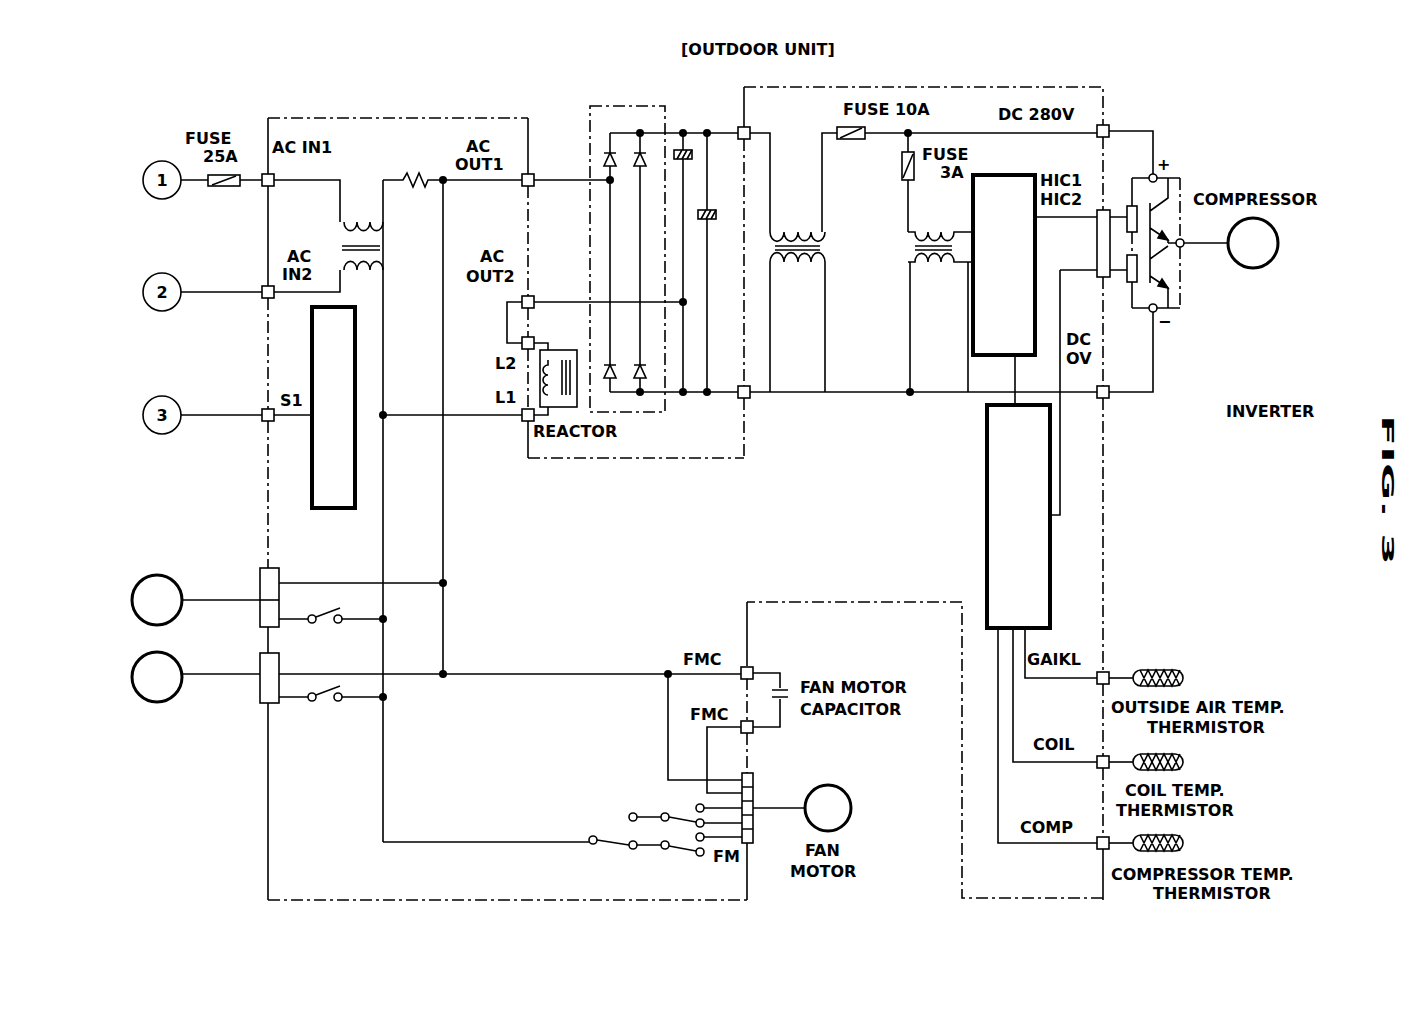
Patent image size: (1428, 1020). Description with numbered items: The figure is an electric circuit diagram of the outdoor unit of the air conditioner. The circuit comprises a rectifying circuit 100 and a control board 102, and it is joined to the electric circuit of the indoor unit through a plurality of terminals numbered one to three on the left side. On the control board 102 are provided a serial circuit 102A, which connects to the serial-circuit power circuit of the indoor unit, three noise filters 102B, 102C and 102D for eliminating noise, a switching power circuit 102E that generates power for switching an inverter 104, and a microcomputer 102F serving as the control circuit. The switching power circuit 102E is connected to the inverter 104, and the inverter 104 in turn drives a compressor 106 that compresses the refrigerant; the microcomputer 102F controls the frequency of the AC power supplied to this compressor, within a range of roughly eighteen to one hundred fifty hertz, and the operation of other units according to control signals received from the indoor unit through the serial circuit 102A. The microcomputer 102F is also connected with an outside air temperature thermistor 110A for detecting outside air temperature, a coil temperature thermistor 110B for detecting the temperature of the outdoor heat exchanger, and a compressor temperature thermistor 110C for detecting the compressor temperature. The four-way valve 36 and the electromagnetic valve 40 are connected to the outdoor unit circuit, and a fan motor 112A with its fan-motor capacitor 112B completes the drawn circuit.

The rectifying circuit 100 is at (634, 105).
The control board 102 is at (912, 87).
The serial circuit 102A is at (312, 476).
The noise filter 102B is at (356, 192).
The noise filter 102C is at (819, 252).
The noise filter 102D is at (912, 242).
The switching power circuit 102E is at (982, 370).
The microcomputer 102F is at (987, 540).
The inverter 104 is at (1170, 320).
The compressor 106 is at (1270, 262).
The outside air temperature thermistor 110A is at (1183, 678).
The coil temperature thermistor 110B is at (1183, 762).
The compressor temperature thermistor 110C is at (1183, 843).
The fan motor 112A is at (848, 795).
The fan-motor capacitor 112B is at (786, 690).
The four-way valve 36 is at (157, 575).
The electromagnetic valve 40 is at (157, 702).